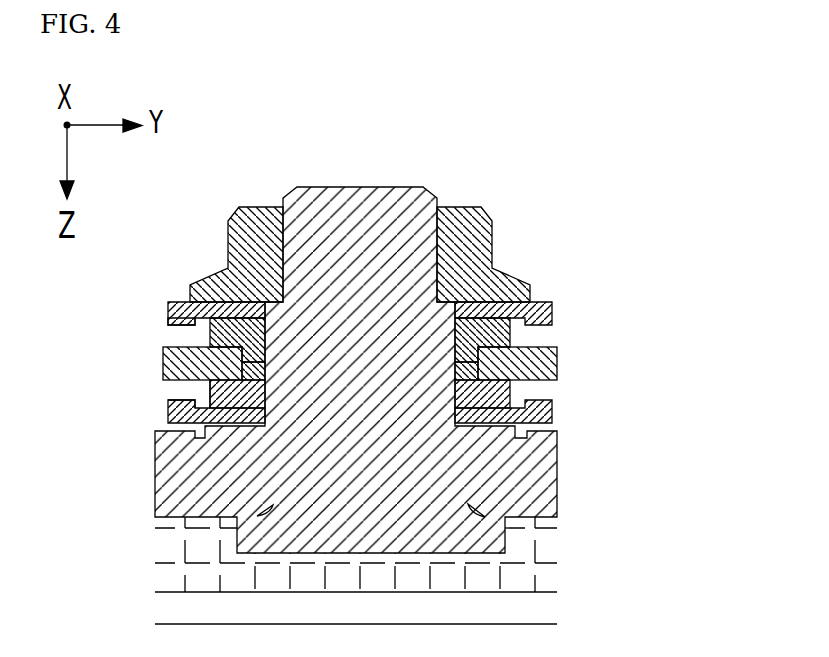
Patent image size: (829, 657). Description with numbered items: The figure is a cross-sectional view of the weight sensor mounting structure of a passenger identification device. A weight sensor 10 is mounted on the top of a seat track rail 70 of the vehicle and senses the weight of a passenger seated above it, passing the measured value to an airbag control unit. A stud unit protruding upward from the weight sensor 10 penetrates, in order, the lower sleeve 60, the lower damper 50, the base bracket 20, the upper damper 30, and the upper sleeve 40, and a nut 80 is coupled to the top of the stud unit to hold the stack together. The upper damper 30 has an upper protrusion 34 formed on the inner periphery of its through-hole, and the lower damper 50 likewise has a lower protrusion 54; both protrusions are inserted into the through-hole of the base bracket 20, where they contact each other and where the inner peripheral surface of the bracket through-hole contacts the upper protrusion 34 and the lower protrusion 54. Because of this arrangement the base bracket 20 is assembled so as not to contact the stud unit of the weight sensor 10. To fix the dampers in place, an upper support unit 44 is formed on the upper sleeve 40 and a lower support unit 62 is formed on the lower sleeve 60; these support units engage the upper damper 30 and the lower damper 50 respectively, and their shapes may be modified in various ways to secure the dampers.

The weight sensor 10 is at (537, 472).
The base bracket 20 is at (543, 363).
The upper damper 30 is at (510, 332).
The upper protrusion 34 is at (242, 365).
The upper sleeve 40 is at (552, 302).
The upper support unit 44 is at (168, 323).
The lower damper 50 is at (510, 387).
The lower protrusion 54 is at (210, 395).
The lower sleeve 60 is at (553, 407).
The lower support unit 62 is at (167, 403).
The seat track rail 70 is at (530, 552).
The nut 80 is at (493, 232).